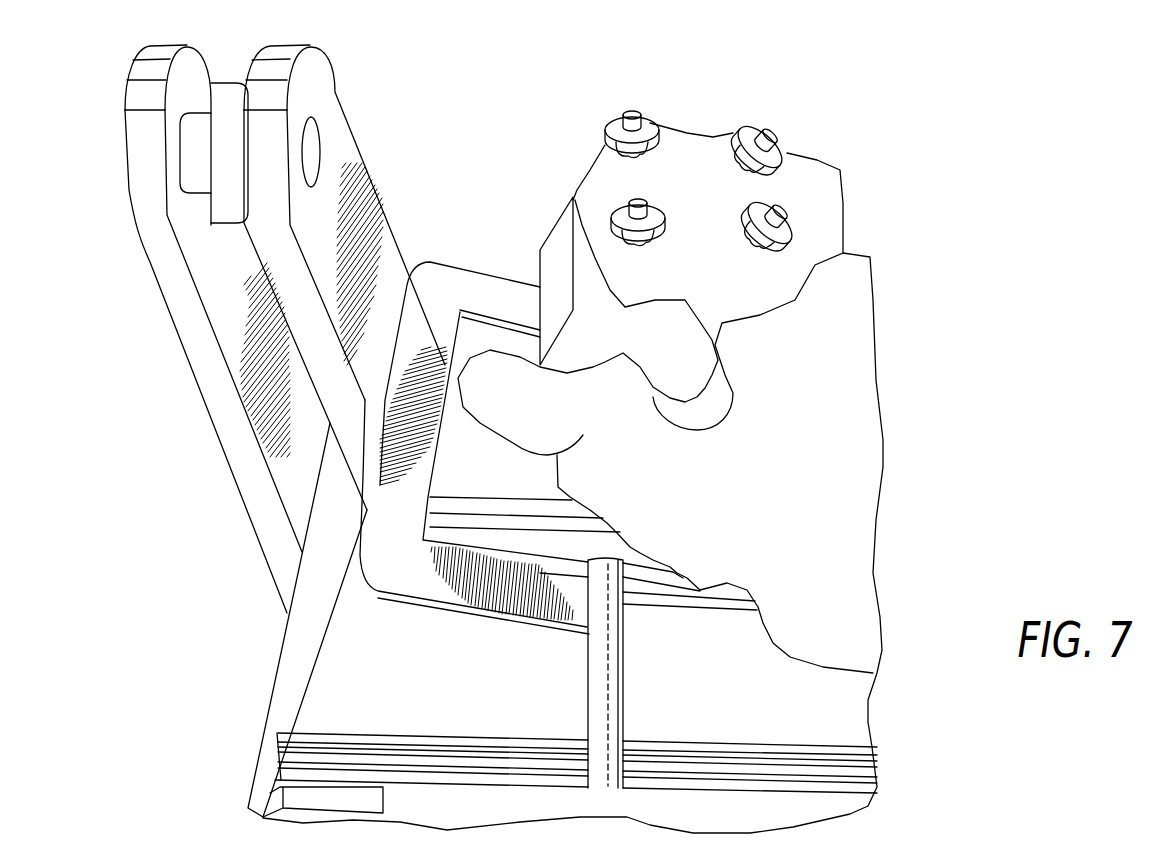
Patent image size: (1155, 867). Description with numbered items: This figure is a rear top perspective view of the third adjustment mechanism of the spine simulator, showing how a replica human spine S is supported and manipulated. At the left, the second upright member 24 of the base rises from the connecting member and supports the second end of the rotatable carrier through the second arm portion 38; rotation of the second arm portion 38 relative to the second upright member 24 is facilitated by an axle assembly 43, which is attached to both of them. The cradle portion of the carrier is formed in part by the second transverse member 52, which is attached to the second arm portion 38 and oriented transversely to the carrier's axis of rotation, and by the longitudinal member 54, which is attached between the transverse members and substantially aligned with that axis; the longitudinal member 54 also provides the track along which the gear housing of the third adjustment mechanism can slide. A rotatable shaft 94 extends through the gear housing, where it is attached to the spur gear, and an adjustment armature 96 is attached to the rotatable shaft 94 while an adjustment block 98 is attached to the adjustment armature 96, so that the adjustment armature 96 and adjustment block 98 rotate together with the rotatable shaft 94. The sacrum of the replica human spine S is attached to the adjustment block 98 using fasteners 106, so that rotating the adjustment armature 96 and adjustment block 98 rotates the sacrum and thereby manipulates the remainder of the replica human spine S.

The second upright member 24 is at (256, 321).
The second arm portion 38 is at (366, 214).
The axle assembly 43 is at (312, 153).
The second transverse member 52 is at (562, 620).
The longitudinal member 54 is at (751, 767).
The rotatable shaft 94 is at (625, 683).
The adjustment armature 96 is at (483, 290).
The adjustment block 98 is at (560, 252).
The fasteners 106 is at (635, 203).
The replica human spine S is at (897, 462).